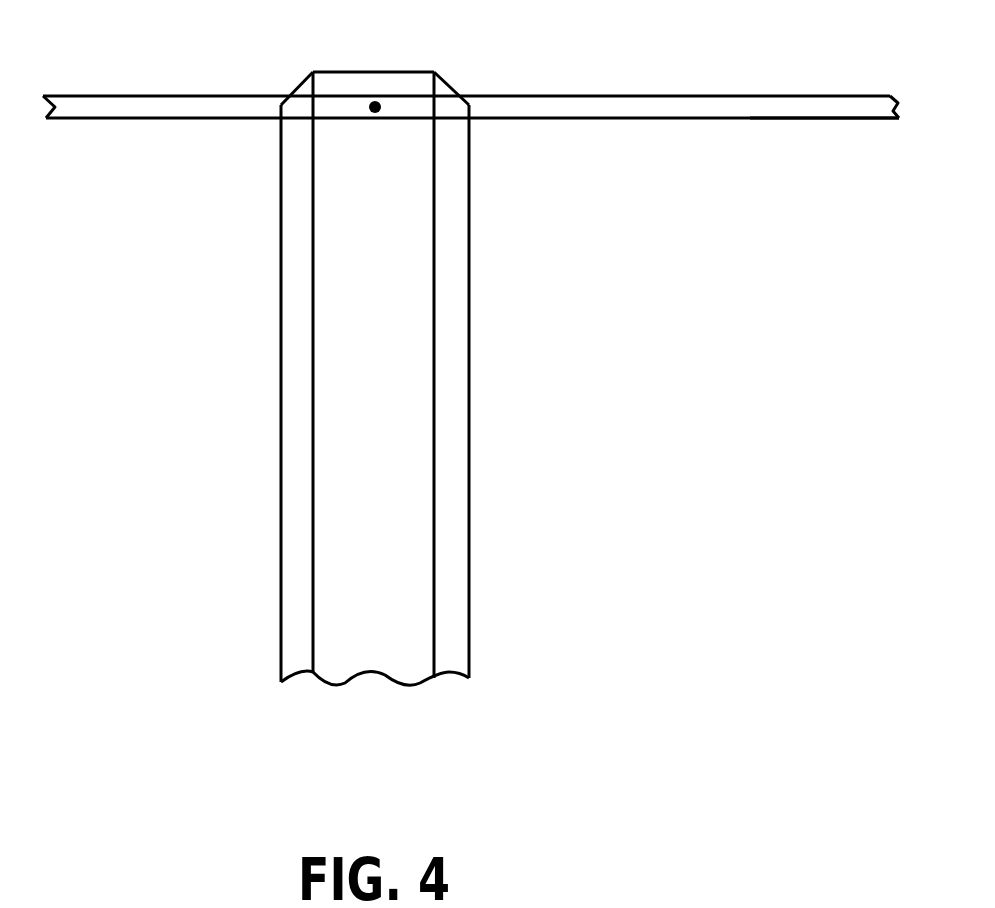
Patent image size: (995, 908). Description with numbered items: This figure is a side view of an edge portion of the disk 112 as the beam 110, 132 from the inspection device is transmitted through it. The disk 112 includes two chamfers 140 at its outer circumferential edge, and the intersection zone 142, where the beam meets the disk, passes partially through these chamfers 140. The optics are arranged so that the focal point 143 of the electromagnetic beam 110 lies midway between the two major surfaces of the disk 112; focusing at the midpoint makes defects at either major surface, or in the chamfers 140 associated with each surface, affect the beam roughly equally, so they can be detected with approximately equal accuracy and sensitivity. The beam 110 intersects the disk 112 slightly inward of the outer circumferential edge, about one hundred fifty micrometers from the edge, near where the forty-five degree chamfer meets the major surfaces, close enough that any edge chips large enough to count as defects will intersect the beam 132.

The beam 110 is at (97, 118).
The disk 112 is at (469, 357).
The beam 132 is at (750, 118).
The chamfers 140 is at (295, 88).
The intersection zone 142 is at (340, 96).
The focal point 143 is at (380, 111).